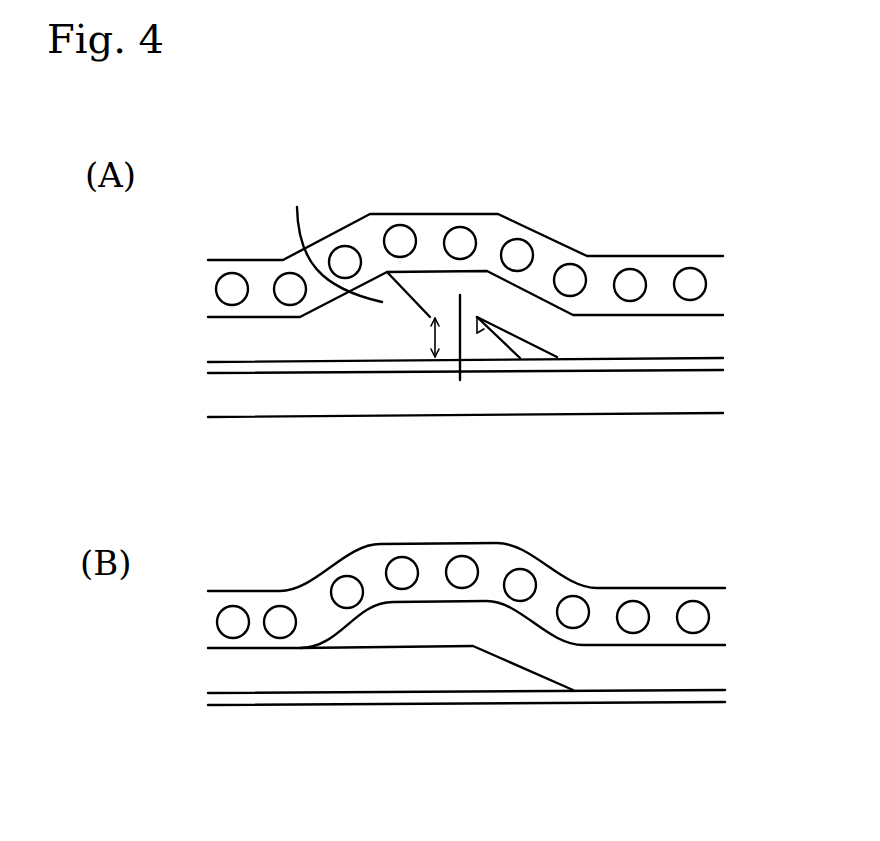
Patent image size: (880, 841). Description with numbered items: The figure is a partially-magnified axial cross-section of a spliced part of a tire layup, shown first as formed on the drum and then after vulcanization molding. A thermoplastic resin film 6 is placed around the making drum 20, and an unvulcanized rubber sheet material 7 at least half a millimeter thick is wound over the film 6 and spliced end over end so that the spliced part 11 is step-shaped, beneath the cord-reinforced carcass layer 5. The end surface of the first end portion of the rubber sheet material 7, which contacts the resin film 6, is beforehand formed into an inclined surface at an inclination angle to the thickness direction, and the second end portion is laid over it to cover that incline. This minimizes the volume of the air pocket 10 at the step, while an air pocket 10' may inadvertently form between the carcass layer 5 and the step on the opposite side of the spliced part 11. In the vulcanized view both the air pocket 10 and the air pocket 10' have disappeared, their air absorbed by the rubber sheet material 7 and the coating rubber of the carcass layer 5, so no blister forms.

The carcass layer 5 is at (543, 260).
The rubber sheet material 7 is at (653, 343).
The thermoplastic resin film 6 is at (265, 367).
The making drum 20 is at (226, 395).
The spliced part 11 is at (395, 342).
The air pocket 10 is at (494, 405).
The air pocket 10' is at (328, 233).